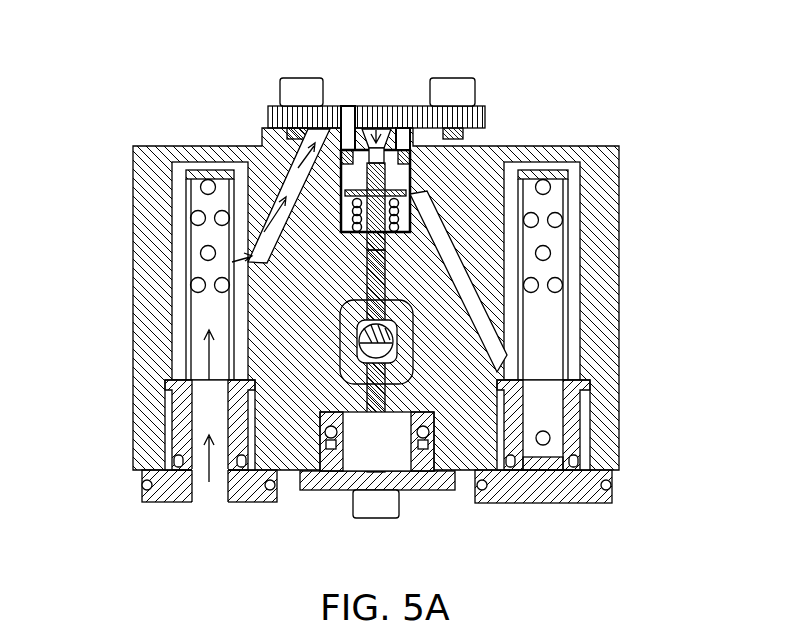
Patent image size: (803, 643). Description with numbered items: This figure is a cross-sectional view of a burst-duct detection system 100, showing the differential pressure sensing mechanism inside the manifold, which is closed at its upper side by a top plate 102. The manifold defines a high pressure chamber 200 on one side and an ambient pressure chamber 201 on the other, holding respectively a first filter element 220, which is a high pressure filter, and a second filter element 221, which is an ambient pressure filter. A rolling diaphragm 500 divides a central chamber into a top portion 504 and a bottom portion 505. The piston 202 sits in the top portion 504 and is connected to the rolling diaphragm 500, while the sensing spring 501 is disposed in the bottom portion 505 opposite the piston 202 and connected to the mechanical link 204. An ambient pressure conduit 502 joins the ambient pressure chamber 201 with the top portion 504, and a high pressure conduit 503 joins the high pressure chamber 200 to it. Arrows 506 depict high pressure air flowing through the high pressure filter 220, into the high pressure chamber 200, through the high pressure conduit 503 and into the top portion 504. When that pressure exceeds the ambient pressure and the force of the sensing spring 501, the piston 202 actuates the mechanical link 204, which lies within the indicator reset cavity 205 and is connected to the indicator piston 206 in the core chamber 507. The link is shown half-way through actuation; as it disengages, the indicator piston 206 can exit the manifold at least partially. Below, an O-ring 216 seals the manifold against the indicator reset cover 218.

The burst-duct detection system (BDDS) 100 is at (375, 288).
The top plate 102 is at (272, 106).
The high pressure chamber 200 is at (182, 327).
The ambient pressure chamber 201 is at (573, 307).
The piston 202 is at (348, 108).
The mechanical link 204 is at (245, 260).
The indicator reset cavity 205 is at (400, 477).
The indicator piston 206 is at (335, 338).
The O-ring 216 is at (356, 490).
The indicator reset cover 218 is at (327, 477).
The first filter element 220 is at (175, 428).
The second filter element 221 is at (575, 438).
The rolling diaphragm 500 is at (402, 197).
The sensing spring 501 is at (395, 220).
The ambient pressure conduit 502 is at (480, 320).
The high pressure conduit 503 is at (283, 163).
The top portion 504 is at (403, 180).
The bottom portion 505 is at (228, 214).
The arrows 506 is at (200, 475).
The core chamber 507 is at (398, 396).